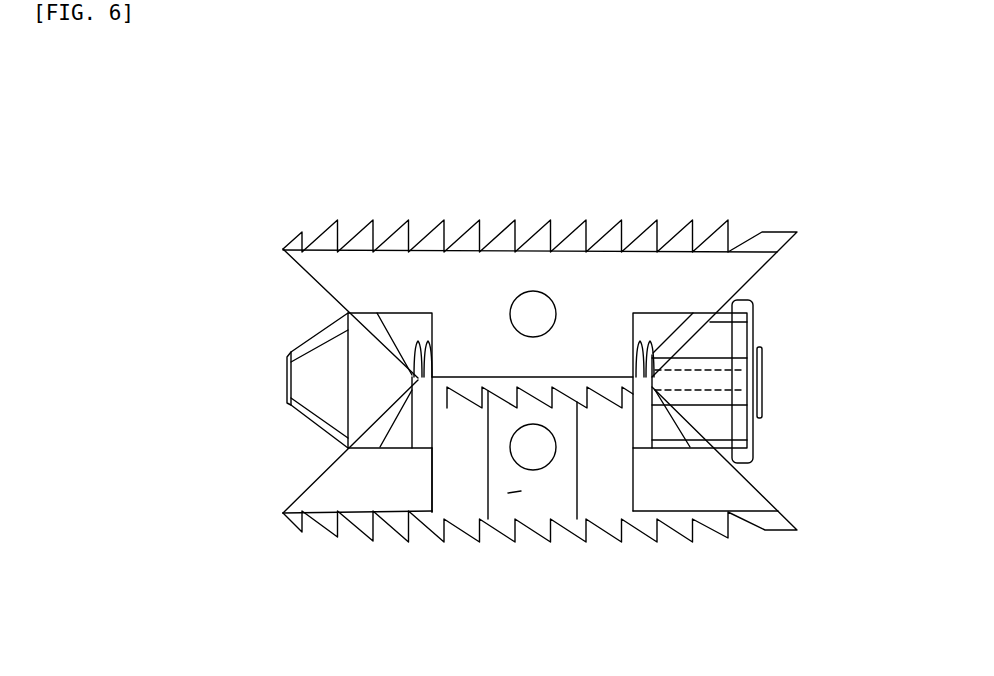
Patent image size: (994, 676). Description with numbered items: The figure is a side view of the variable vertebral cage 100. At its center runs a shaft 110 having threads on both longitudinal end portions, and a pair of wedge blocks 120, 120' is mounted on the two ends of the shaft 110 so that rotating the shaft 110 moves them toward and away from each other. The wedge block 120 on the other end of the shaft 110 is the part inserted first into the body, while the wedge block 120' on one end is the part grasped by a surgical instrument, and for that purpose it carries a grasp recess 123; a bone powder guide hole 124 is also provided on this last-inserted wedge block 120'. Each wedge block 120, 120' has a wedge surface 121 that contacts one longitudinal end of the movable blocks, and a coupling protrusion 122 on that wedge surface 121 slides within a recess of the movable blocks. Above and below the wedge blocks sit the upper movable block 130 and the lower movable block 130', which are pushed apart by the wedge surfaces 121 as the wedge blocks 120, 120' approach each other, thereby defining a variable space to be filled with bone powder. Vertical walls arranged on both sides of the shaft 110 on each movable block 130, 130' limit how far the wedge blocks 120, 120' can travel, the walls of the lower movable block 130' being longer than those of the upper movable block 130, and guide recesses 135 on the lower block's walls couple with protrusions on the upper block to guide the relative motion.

The variable vertebral cage 100 is at (205, 92).
The shaft 110 is at (762, 348).
The wedge block 120 is at (287, 390).
The wedge block 120' is at (774, 391).
The wedge surface 121 is at (381, 425).
The coupling protrusion 122 is at (388, 335).
The grasp recess 123 is at (732, 383).
The bone powder guide hole 124 is at (707, 390).
The upper movable block 130 is at (540, 238).
The lower movable block 130' is at (540, 517).
The guide recesses 135 is at (517, 494).